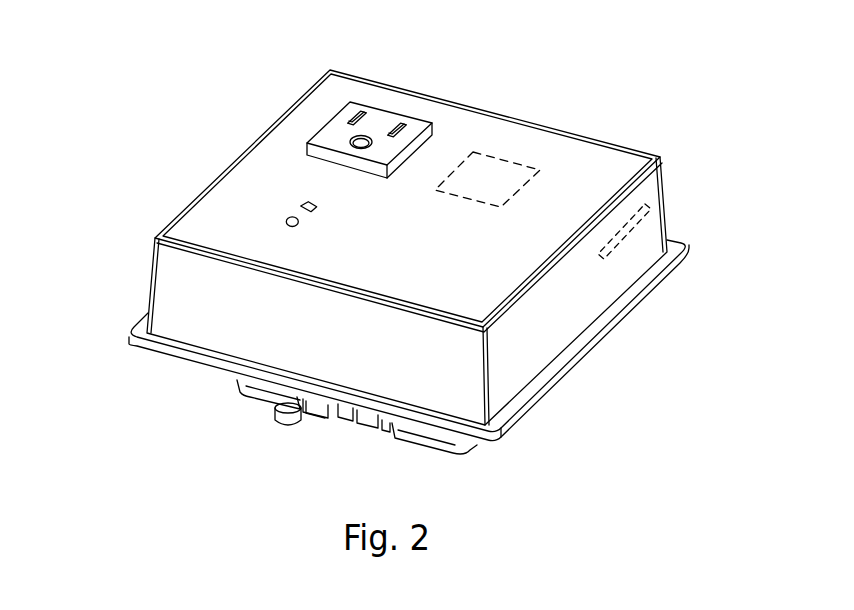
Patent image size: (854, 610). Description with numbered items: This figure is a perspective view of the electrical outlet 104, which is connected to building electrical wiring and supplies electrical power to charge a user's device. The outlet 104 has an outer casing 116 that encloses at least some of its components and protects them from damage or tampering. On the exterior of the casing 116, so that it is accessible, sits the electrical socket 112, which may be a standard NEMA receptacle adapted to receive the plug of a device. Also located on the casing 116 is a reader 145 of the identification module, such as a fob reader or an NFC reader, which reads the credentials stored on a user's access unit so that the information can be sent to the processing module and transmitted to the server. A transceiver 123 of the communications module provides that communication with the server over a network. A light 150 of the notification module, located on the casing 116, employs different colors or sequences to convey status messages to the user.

The electrical outlet 104 is at (405, 236).
The electrical socket 112 is at (335, 133).
The outer casing 116 is at (172, 278).
The transceiver 123 is at (633, 228).
The reader 145 is at (498, 170).
The light 150 is at (297, 202).